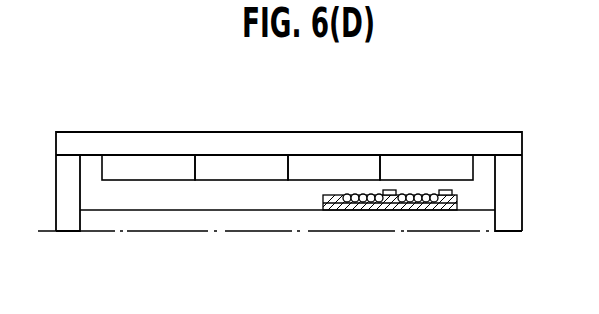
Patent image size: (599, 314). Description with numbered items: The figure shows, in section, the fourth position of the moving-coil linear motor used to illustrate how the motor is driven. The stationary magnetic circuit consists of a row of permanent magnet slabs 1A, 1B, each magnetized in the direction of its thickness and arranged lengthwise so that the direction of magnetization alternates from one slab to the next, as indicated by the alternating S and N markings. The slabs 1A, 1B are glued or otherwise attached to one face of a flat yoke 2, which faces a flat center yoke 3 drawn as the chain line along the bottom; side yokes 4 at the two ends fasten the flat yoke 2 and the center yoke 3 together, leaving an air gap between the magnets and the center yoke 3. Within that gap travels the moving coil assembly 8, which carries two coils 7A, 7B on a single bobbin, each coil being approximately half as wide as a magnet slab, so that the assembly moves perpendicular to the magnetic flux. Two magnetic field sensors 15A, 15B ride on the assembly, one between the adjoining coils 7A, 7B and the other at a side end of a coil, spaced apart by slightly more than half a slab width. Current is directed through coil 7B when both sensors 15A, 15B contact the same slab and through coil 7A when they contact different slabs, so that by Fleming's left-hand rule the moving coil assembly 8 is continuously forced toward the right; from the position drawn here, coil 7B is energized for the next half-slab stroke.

The permanent magnet slab 1A is at (136, 163).
The permanent magnet slab 1B is at (215, 163).
The flat yoke 2 is at (513, 147).
The center yoke 3 is at (152, 228).
The side yoke 4 is at (62, 197).
The coil 7A is at (345, 192).
The coil 7B is at (408, 190).
The moving coil assembly 8 is at (322, 203).
The magnetic field sensor 15A is at (390, 190).
The magnetic field sensor 15B is at (448, 189).